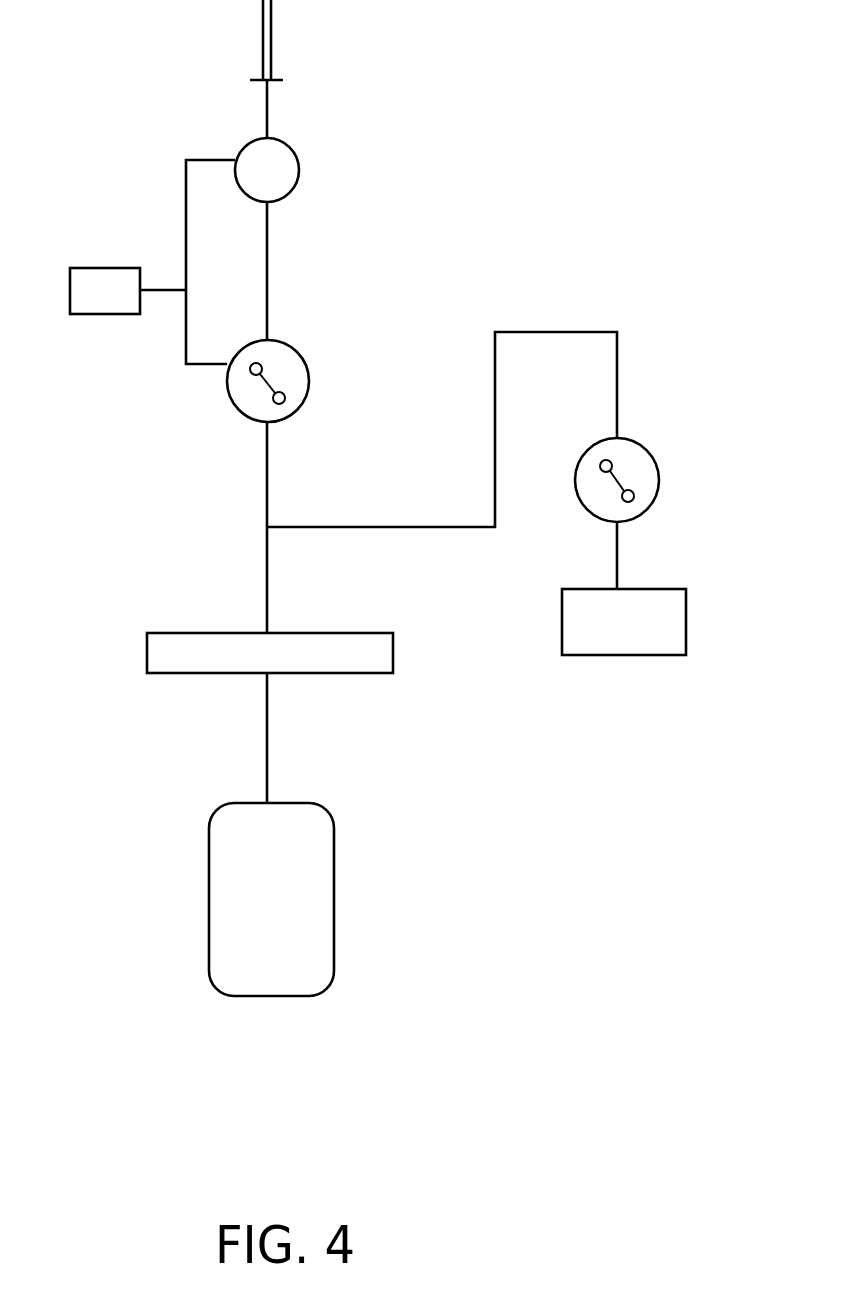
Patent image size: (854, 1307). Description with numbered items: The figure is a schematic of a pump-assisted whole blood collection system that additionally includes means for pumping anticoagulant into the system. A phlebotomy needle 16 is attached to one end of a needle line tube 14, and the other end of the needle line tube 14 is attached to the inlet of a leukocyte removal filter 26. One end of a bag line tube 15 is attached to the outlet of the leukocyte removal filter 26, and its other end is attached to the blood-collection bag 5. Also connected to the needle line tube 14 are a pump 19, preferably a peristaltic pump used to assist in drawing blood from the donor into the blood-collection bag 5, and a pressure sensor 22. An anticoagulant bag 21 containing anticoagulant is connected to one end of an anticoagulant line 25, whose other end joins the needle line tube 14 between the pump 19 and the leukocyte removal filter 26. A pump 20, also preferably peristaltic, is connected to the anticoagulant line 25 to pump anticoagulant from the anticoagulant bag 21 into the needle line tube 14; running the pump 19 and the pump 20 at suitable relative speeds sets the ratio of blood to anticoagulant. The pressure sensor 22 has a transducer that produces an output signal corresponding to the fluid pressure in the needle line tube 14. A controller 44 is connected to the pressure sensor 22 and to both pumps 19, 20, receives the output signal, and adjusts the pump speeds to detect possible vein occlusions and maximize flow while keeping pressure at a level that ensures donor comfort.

The phlebotomy needle 16 is at (271, 32).
The pressure sensor 22 is at (240, 146).
The controller 44 is at (95, 272).
The pump 19 is at (228, 403).
The needle line tube 14 is at (269, 467).
The anticoagulant line 25 is at (533, 330).
The pump 20 is at (660, 470).
The anticoagulant bag 21 is at (620, 657).
The leukocyte removal filter 26 is at (147, 660).
The bag line tube 15 is at (267, 740).
The blood-collection bag 5 is at (300, 925).